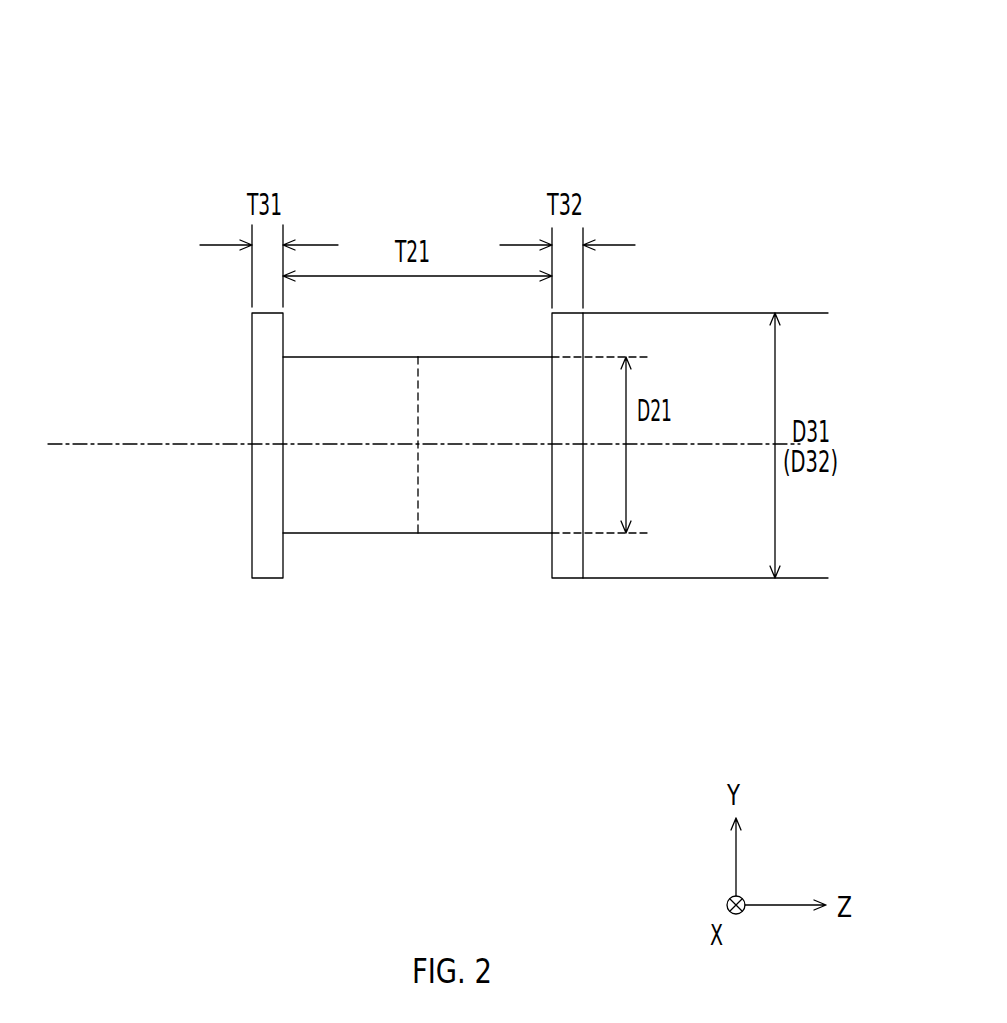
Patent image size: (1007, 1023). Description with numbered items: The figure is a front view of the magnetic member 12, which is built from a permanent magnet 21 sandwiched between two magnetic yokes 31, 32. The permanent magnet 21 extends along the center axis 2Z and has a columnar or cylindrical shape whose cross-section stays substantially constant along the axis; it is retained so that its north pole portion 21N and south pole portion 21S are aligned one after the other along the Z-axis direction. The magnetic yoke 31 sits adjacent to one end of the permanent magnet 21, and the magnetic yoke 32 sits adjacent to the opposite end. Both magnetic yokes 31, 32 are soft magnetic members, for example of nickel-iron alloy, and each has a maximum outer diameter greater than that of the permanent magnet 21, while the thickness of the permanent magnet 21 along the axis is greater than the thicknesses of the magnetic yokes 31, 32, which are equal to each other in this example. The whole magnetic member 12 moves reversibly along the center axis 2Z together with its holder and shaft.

The magnetic member 12 is at (648, 112).
The permanent magnet 21 is at (417, 535).
The north pole portion 21N is at (373, 522).
The south pole portion 21S is at (472, 520).
The magnetic yoke 31 is at (273, 560).
The magnetic yoke 32 is at (572, 571).
The center axis 2Z is at (123, 447).